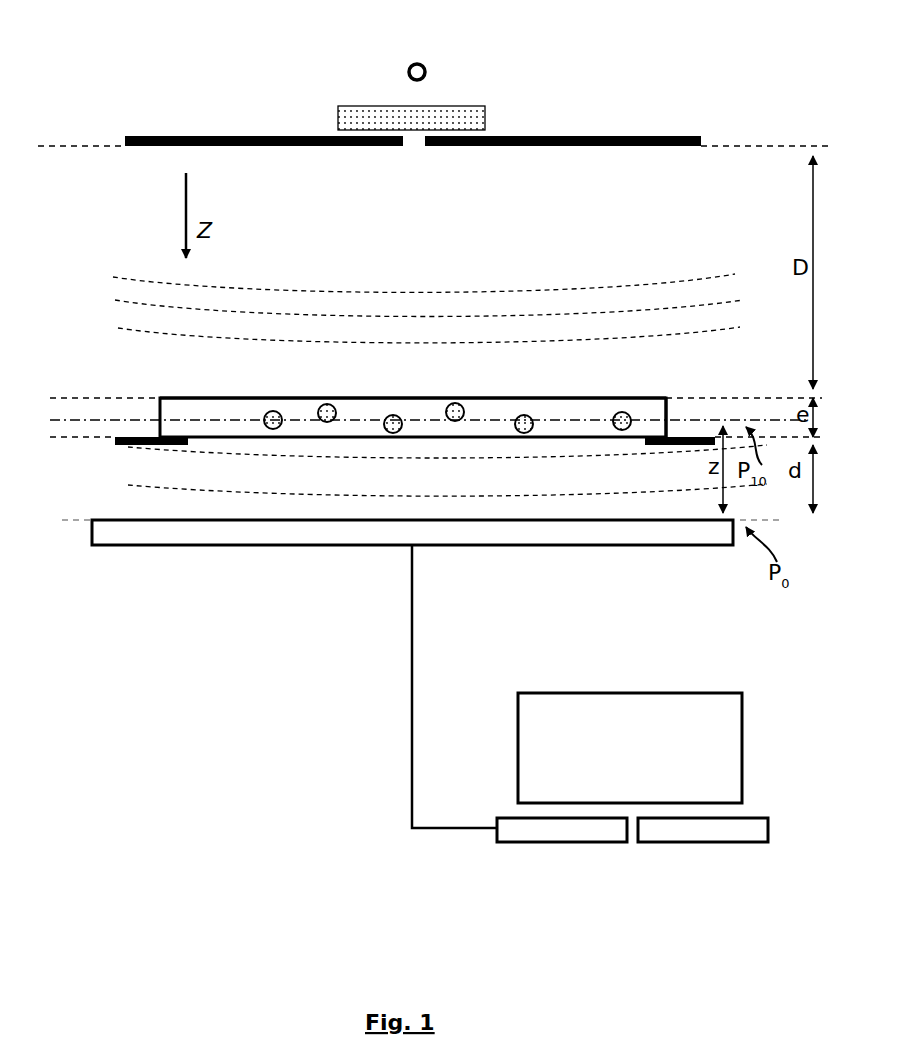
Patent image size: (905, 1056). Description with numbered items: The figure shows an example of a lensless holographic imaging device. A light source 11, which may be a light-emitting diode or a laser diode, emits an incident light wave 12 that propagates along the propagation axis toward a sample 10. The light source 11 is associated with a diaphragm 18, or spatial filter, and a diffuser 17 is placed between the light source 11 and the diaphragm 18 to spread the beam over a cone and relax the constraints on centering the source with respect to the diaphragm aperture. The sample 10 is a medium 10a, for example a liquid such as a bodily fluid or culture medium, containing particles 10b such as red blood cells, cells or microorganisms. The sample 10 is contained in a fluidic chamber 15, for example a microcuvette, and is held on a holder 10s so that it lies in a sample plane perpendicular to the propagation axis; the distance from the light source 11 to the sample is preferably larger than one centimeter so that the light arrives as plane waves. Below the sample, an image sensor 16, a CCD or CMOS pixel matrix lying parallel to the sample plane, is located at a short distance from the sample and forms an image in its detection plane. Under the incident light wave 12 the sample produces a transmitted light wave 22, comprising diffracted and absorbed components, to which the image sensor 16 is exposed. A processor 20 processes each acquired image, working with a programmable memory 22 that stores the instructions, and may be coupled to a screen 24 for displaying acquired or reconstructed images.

The sample 10 is at (158, 404).
The medium 10a is at (588, 410).
The particles 10b is at (318, 410).
The holder 10s is at (150, 450).
The light source 11 is at (405, 70).
The incident light wave 12 is at (106, 260).
The fluidic chamber 15 is at (670, 410).
The image sensor 16 is at (704, 544).
The diffuser 17 is at (466, 122).
The diaphragm 18 is at (706, 145).
The processor 20 is at (555, 832).
The light wave transmitted by the sample 22 is at (102, 437).
The screen 24 is at (722, 720).